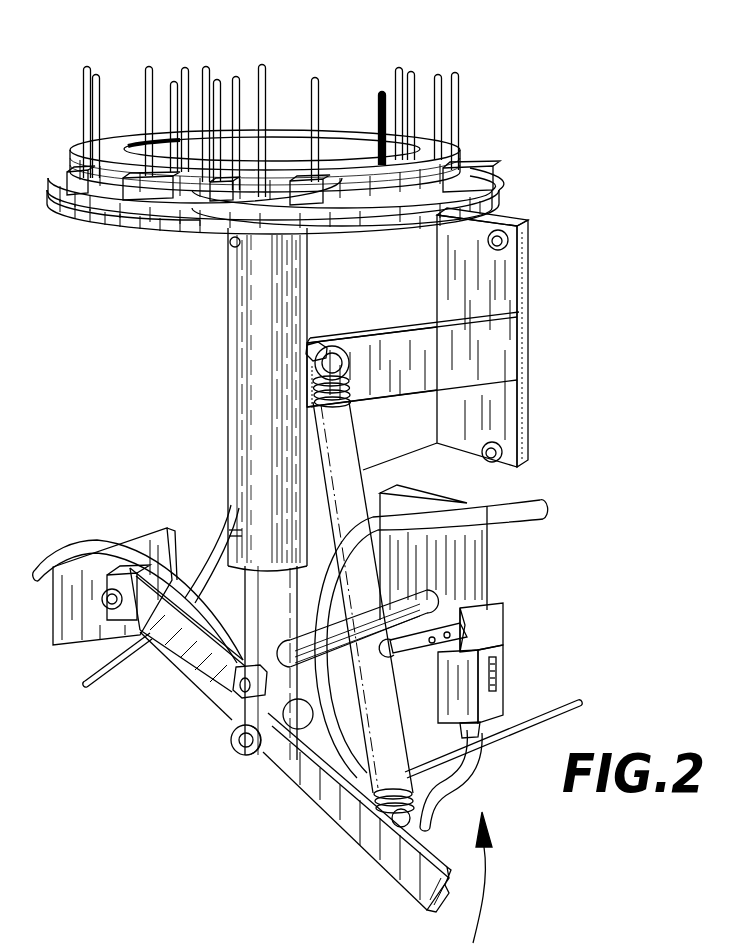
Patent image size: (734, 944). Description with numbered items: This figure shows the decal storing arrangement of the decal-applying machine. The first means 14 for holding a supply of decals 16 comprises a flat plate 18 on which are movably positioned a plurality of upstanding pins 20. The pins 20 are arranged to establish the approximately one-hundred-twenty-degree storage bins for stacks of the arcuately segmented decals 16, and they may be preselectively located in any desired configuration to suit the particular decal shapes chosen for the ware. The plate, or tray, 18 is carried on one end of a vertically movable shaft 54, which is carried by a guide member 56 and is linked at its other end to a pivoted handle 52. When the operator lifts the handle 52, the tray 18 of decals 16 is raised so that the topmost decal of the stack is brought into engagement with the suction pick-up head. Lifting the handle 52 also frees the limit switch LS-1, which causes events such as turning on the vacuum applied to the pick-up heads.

The first means for holding a supply of decals 14 is at (478, 108).
The decals 16 is at (355, 189).
The flat plate 18 is at (130, 216).
The upstanding pins 20 is at (320, 100).
The pivoted handle 52 is at (318, 792).
The vertically movable shaft 54 is at (225, 660).
The guide member 56 is at (245, 406).
The limit switch LS-1 is at (505, 678).